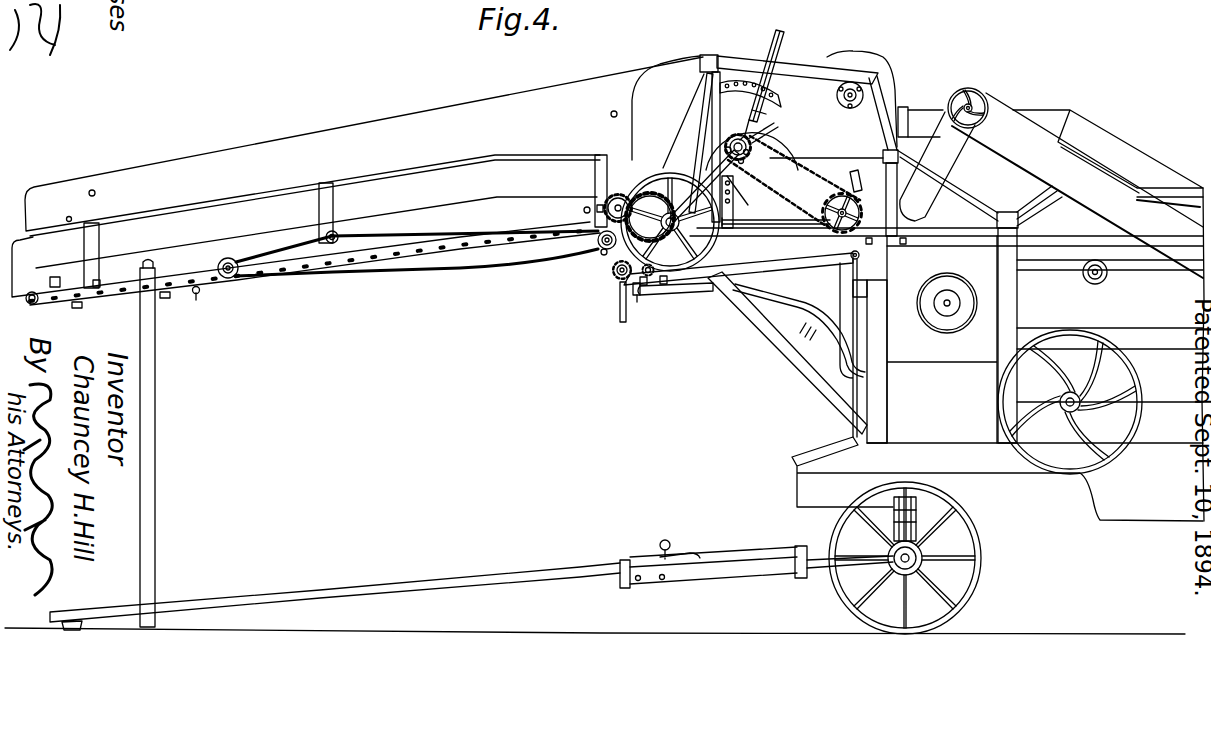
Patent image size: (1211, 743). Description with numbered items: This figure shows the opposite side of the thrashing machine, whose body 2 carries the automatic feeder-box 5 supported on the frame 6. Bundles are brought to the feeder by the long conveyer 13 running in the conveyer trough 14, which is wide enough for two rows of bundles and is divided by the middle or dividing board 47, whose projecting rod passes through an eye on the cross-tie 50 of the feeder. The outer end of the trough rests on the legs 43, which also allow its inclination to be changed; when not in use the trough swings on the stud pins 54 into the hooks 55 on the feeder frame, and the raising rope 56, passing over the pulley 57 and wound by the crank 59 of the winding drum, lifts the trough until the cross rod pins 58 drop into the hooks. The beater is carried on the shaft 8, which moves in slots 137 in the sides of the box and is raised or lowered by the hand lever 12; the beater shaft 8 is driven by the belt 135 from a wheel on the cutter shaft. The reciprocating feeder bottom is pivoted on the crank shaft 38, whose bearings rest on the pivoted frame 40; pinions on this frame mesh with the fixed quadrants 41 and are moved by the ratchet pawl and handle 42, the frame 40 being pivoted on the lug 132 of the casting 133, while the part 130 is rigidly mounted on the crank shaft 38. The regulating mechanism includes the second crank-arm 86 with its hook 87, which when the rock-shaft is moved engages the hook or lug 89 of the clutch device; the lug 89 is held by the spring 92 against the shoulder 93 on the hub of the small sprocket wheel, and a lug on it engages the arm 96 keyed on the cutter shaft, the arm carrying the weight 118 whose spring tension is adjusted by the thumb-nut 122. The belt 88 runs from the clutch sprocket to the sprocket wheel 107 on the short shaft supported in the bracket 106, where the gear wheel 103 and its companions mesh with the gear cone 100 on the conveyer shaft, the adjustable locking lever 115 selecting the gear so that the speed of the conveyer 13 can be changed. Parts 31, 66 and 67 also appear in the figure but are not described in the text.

The body of the thrashing machine 2 is at (583, 197).
The automatic feeder-box 5 is at (794, 181).
The frame 6 is at (757, 340).
The beater shaft 8 is at (867, 200).
The hand lever 12 is at (783, 42).
The long conveyer 13 is at (268, 280).
The conveyer trough 14 is at (304, 245).
The pipe 31 is at (812, 335).
The crank shaft 38 is at (653, 276).
The pivoted frame 40 is at (775, 263).
The fixed quadrant 41 is at (637, 296).
The ratchet pawl and handle 42 is at (614, 273).
The legs 43 is at (155, 334).
The dividing board 47 is at (364, 146).
The cross-tie 50 is at (705, 56).
The stud pins 54 is at (584, 210).
The hooks 55 is at (597, 241).
The raising rope 56 is at (372, 234).
The pulley 57 is at (600, 250).
The cross rod pins 58 is at (385, 248).
The crank of the winding drum 59 is at (200, 293).
The hood 66 is at (895, 71).
The delivery chute 67 is at (1040, 115).
The second crank-arm 86 is at (711, 101).
The hook 87 is at (702, 146).
The belt 88 is at (736, 191).
The hook or lug 89 is at (733, 145).
The spring 92 is at (748, 138).
The shoulder 93 is at (750, 150).
The arm 96 is at (764, 147).
The gear cone 100 is at (619, 193).
The gear wheel 103 is at (688, 247).
The bracket 106 is at (698, 233).
The sprocket wheel 107 is at (663, 178).
The adjustable and locking lever 115 is at (790, 226).
The weight 118 is at (775, 103).
The thumb-nut 122 is at (745, 160).
The part mounted on crank shaft 130 is at (703, 143).
The lug 132 is at (861, 258).
The casting 133 is at (847, 281).
The belt 135 is at (826, 160).
The slots 137 is at (856, 170).